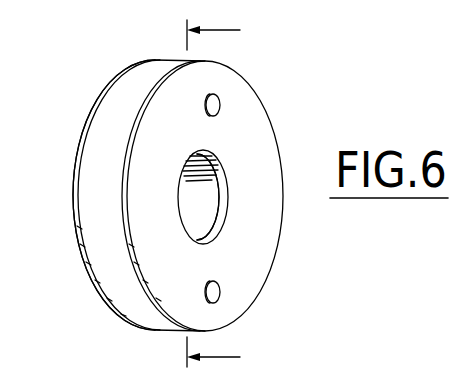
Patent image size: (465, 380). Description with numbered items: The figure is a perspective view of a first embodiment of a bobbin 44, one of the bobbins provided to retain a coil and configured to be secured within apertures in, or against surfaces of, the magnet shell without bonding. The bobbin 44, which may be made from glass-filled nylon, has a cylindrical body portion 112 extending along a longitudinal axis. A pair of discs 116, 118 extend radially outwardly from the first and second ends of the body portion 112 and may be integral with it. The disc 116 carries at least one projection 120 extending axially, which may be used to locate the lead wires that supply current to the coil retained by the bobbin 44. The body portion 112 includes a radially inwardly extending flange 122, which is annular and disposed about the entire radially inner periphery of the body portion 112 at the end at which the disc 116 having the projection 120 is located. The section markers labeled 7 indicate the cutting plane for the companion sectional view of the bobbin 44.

The bobbin 44 is at (283, 76).
The cylindrical body portion 112 is at (208, 173).
The disc 116 is at (267, 250).
The disc 118 is at (123, 292).
The projection 120 is at (220, 291).
The flange 122 is at (227, 210).
The section line 7- 7 is at (228, 194).